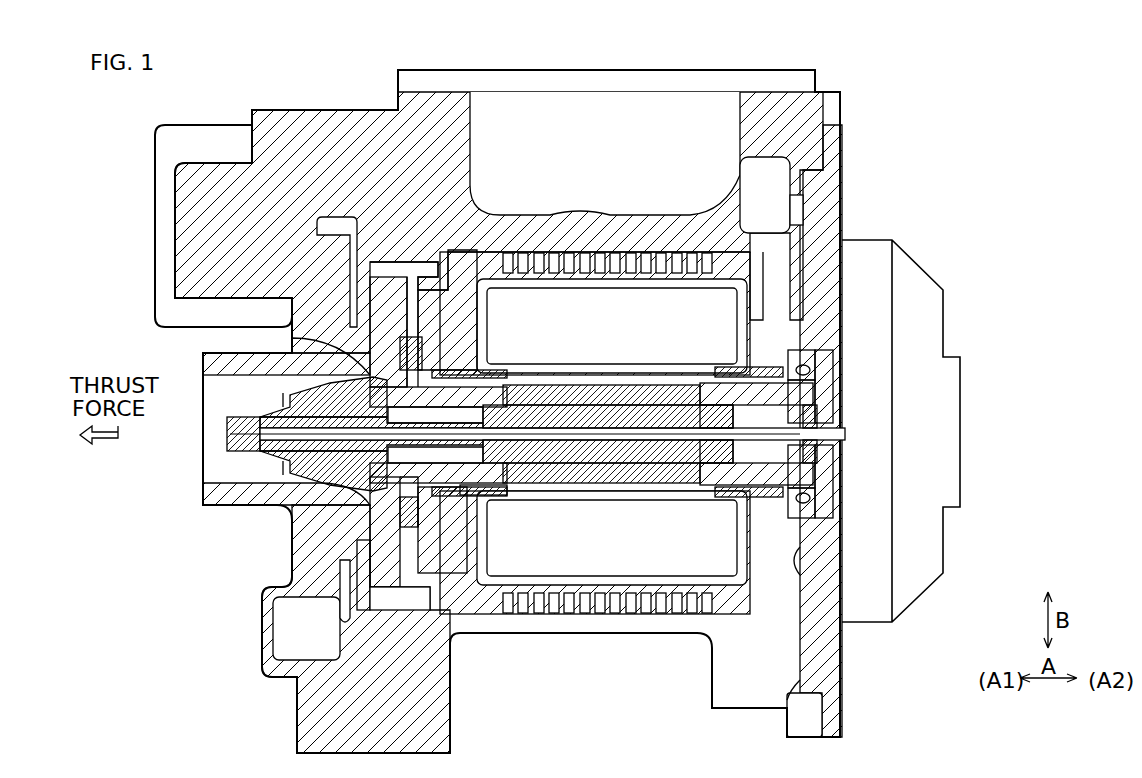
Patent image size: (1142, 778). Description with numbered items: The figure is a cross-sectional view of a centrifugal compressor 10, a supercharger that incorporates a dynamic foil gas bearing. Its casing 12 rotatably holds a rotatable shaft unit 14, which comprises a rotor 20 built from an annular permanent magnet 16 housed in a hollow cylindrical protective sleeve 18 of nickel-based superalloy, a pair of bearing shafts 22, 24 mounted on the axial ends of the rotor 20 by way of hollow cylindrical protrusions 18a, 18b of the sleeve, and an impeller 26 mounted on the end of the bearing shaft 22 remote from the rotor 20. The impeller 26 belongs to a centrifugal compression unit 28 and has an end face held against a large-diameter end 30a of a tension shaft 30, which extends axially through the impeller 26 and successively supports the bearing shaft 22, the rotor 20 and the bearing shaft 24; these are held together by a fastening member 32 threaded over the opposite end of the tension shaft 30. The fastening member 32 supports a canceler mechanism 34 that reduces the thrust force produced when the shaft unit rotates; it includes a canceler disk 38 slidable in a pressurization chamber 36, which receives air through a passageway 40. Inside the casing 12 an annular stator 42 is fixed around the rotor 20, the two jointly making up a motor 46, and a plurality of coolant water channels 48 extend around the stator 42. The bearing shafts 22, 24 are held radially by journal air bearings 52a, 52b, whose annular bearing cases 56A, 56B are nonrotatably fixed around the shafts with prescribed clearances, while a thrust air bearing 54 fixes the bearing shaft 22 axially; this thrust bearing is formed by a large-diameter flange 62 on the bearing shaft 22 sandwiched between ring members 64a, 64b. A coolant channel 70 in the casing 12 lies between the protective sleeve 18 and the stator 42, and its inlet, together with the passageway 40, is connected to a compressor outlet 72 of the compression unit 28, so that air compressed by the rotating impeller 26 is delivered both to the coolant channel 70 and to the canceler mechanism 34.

The centrifugal compressor 10 is at (1018, 186).
The casing 12 is at (845, 195).
The rotatable shaft unit 14 is at (675, 355).
The annular permanent magnet 16 is at (674, 490).
The hollow cylindrical protective sleeve 18 is at (642, 370).
The hollow cylindrical protrusion 18a is at (525, 502).
The hollow cylindrical protrusion 18b is at (752, 500).
The rotor 20 is at (593, 392).
The bearing shaft 22 is at (500, 492).
The bearing shaft 24 is at (818, 470).
The impeller 26 is at (287, 477).
The centrifugal compression unit 28 is at (228, 352).
The tension shaft 30 is at (612, 440).
The large-diameter end 30a is at (240, 434).
The fastening member 32 is at (845, 488).
The canceler mechanism 34 is at (835, 385).
The pressurization chamber 36 is at (815, 358).
The canceler disk 38 is at (818, 525).
The passageway 40 is at (825, 372).
The annular stator 42 is at (548, 312).
The motor 46 is at (580, 176).
The coolant water channels 48 is at (603, 262).
The journal air bearing 52a is at (467, 530).
The journal air bearing 52b is at (805, 345).
The thrust air bearing 54 is at (413, 330).
The annular bearing case 56A is at (410, 410).
The annular bearing case 56B is at (823, 515).
The large-diameter flange 62 is at (400, 507).
The ring member 64a is at (378, 588).
The ring member 64b is at (363, 545).
The coolant channel 70 is at (680, 485).
The compressor outlet 72 is at (182, 150).